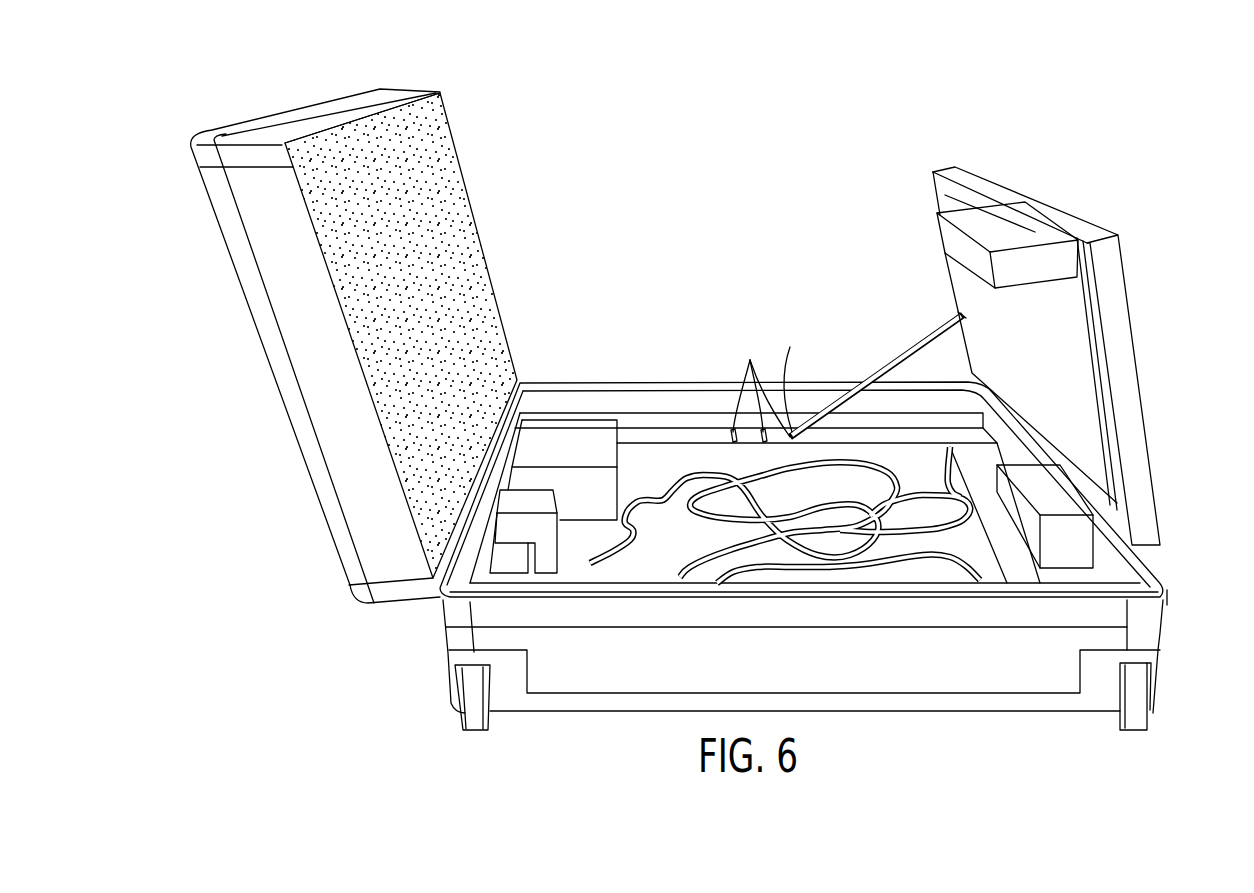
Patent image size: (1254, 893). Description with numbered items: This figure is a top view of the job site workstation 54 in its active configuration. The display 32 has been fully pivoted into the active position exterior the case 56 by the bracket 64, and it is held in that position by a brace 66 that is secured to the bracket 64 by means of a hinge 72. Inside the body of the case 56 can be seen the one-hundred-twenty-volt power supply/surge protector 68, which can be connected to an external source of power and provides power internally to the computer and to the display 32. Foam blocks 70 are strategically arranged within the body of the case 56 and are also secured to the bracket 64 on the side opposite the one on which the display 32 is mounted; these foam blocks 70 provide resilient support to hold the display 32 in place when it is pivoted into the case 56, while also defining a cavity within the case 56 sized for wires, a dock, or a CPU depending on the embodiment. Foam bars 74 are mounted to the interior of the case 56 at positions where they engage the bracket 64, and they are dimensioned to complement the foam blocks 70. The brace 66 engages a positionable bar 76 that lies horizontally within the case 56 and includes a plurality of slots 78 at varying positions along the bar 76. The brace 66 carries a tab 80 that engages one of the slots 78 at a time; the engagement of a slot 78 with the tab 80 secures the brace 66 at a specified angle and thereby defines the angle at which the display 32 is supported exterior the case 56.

The display 32 is at (1045, 207).
The job site workstation 54 is at (688, 242).
The case 56 is at (612, 322).
The bracket 64 is at (935, 178).
The brace 66 is at (900, 348).
The power supply/surge protector 68 is at (558, 515).
The foam blocks 70 is at (572, 433).
The hinge 72 is at (958, 318).
The foam bars 74 is at (1112, 583).
The positionable bar 76 is at (690, 433).
The slots 78 is at (760, 385).
The tab 80 is at (793, 378).